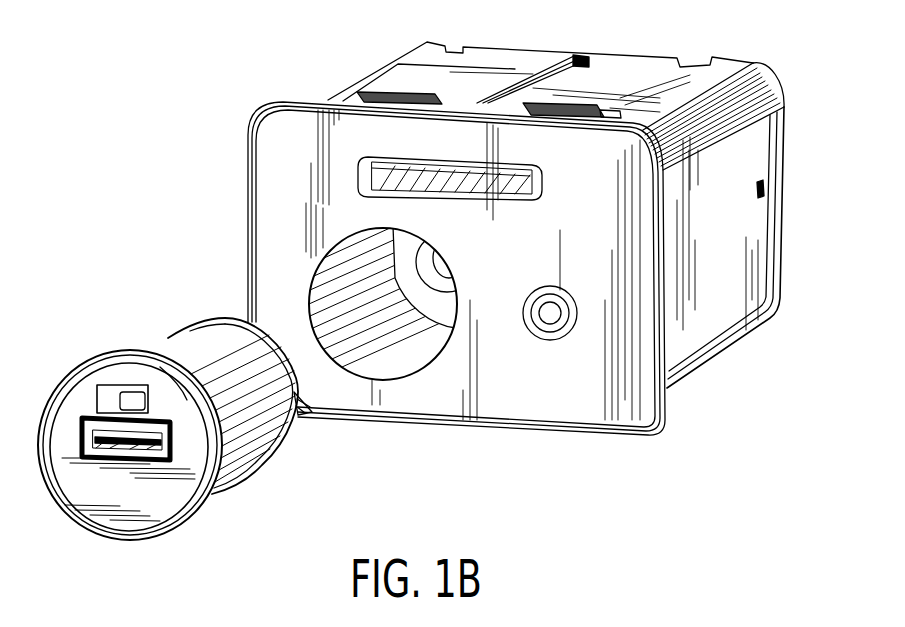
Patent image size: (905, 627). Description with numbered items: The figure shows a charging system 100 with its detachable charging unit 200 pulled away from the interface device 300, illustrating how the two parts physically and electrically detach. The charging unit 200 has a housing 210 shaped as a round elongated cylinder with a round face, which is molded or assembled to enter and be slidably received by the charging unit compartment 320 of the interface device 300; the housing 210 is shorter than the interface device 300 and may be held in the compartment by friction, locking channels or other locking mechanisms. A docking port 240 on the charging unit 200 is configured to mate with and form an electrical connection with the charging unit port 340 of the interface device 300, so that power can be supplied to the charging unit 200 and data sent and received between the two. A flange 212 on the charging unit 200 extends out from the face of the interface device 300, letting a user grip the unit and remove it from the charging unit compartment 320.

The charging system 100 is at (199, 82).
The detachable charging unit 200 is at (52, 386).
The housing 210 is at (240, 475).
The flange 212 is at (153, 512).
The docking port 240 is at (307, 413).
The interface device 300 is at (782, 261).
The charging unit compartment 320 is at (393, 364).
The charging unit port 340 is at (275, 199).